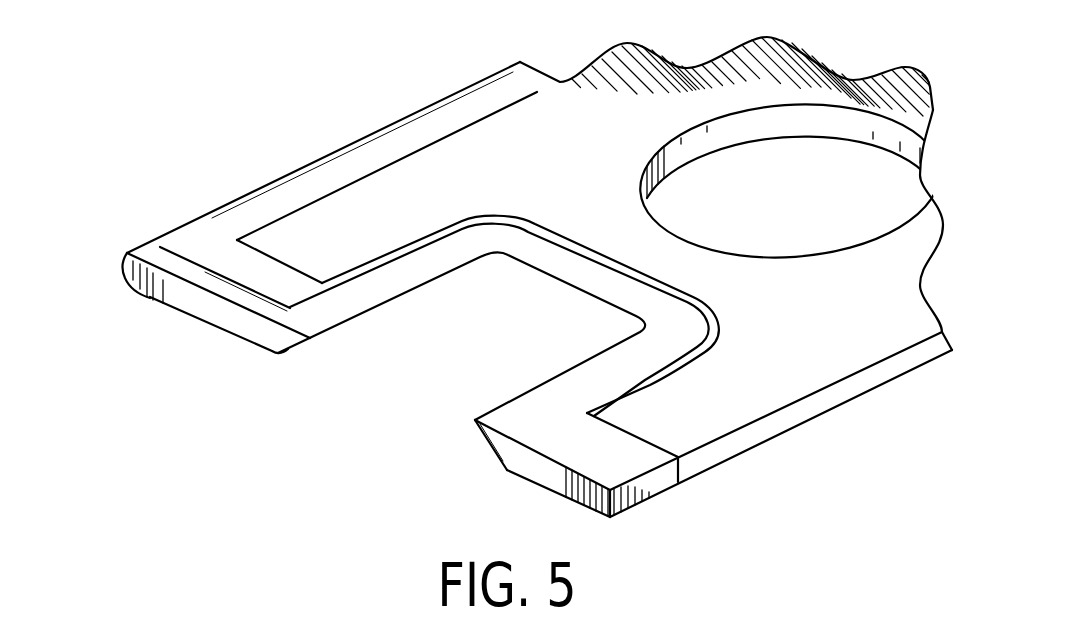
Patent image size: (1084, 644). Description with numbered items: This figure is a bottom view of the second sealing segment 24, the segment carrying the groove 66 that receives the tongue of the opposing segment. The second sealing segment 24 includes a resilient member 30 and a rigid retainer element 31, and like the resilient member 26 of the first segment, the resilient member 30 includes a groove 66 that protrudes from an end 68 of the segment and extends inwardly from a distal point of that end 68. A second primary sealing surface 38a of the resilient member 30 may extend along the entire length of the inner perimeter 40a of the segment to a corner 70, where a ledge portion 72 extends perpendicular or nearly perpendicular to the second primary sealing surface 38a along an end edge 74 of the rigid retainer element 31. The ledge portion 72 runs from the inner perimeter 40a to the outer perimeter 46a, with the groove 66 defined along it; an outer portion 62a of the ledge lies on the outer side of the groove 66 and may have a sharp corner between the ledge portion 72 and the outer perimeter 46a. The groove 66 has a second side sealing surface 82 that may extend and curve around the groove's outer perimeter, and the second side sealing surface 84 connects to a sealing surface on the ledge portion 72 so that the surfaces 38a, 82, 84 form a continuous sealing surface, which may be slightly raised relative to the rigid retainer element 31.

The second sealing segment 24 is at (232, 127).
The resilient member 26 is at (510, 451).
The resilient member 30 is at (734, 418).
The rigid retainer element 31 is at (543, 121).
The second primary sealing surface 38a is at (334, 164).
The inner perimeter 40a is at (300, 167).
The outer perimeter 46a is at (733, 446).
The outer portion 62a is at (540, 473).
The groove 66 is at (393, 274).
The end 68 is at (597, 469).
The corner 70 is at (127, 253).
The ledge portion 72 is at (243, 327).
The end edge 74 is at (238, 265).
The second side sealing surface 82 is at (493, 416).
The second side sealing surface 84 is at (190, 269).